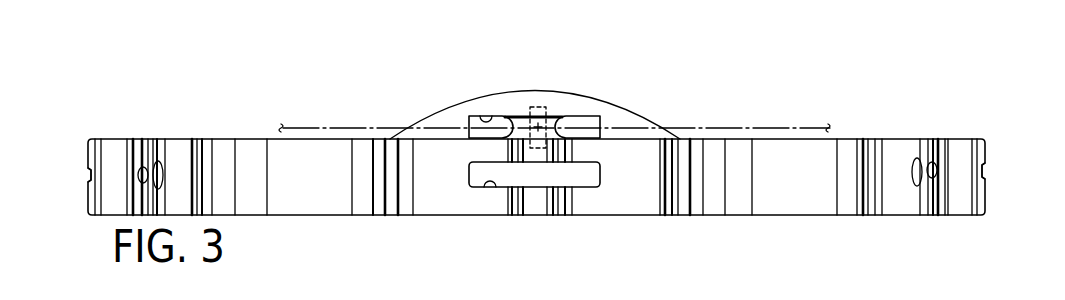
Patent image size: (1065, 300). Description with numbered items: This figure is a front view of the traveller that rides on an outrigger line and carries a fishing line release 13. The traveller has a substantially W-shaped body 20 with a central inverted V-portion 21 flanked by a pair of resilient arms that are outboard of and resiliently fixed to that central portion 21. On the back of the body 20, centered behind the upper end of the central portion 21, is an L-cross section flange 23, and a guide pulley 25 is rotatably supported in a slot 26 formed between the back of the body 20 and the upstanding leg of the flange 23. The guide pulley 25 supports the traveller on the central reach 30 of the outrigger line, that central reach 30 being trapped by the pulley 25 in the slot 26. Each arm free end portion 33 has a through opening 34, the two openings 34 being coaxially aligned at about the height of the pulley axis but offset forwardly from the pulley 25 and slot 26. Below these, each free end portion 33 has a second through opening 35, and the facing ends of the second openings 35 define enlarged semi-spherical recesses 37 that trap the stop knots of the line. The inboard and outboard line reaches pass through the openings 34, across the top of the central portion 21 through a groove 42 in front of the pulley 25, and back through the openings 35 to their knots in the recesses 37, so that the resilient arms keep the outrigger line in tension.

The fishing line release 13 is at (966, 115).
The body 20 is at (766, 215).
The central inverted V-portion 21 is at (603, 195).
The L-cross section flange 23 is at (565, 106).
The guide pulley 25 is at (551, 116).
The slot 26 is at (487, 117).
The central reach 30 is at (693, 127).
The arm free end portion 33 is at (108, 150).
The through opening 34 is at (140, 174).
The second through opening 35 is at (90, 176).
The semi-spherical recess 37 is at (166, 175).
The groove 42 is at (490, 187).